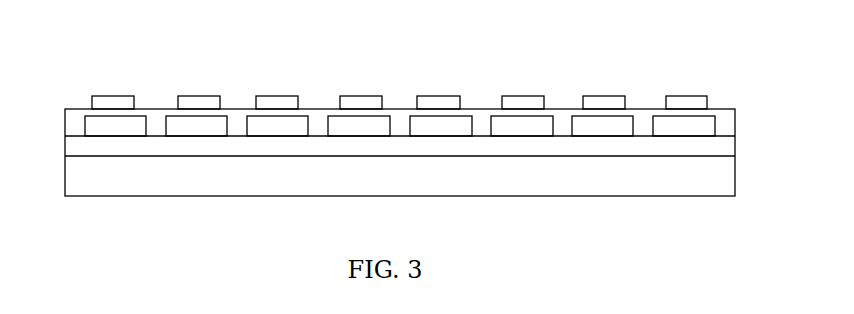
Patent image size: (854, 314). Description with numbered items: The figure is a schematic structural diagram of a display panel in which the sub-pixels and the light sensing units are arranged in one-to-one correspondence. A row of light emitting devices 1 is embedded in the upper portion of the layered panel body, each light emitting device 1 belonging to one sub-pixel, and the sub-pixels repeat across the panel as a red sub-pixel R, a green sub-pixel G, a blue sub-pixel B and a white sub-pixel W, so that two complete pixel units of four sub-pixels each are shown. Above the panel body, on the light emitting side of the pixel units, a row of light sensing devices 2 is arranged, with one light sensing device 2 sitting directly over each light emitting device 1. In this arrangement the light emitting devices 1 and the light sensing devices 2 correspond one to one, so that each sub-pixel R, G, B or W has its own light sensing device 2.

The light emitting device 1 is at (381, 106).
The light sensing device 2 is at (125, 108).
The red sub-pixel R is at (278, 126).
The green sub-pixel G is at (359, 126).
The blue sub-pixel B is at (440, 126).
The white sub-pixel W is at (521, 126).